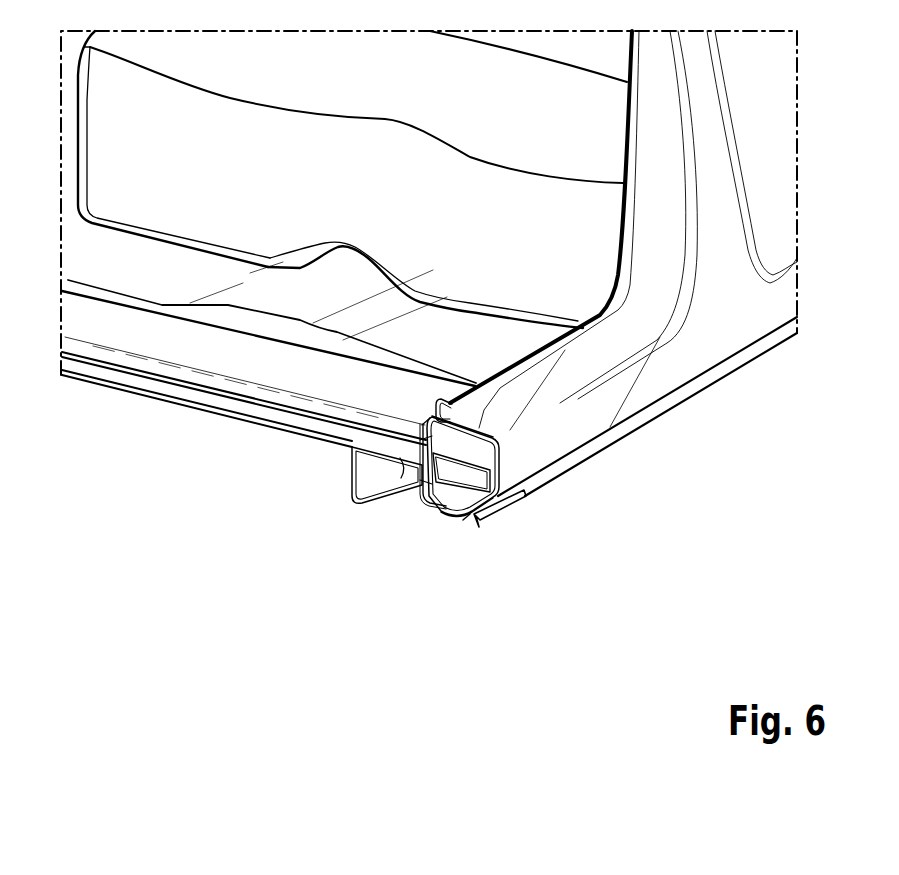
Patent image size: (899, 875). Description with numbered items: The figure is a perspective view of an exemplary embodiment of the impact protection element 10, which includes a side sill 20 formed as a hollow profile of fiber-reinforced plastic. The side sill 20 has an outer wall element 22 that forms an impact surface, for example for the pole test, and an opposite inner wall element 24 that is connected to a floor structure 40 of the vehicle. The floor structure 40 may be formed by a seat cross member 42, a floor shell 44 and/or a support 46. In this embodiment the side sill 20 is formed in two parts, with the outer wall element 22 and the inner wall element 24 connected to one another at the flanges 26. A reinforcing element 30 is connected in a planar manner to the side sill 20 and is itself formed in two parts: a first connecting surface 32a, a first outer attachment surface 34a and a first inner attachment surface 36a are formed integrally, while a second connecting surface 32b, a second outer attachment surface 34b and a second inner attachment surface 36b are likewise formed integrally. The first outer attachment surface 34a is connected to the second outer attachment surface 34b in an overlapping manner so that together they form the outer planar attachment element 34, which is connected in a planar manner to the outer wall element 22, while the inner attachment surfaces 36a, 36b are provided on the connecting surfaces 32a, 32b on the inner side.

The impact protection element 10 is at (550, 610).
The side sill 20 is at (530, 397).
The outer wall element 22 is at (574, 435).
The inner wall element 24 is at (442, 500).
The flanges 26 is at (443, 407).
The reinforcing element 30 is at (473, 436).
The first connecting surface 32a is at (460, 412).
The second connecting surface 32b is at (457, 517).
The outer planar attachment element 34 is at (649, 384).
The first outer attachment surface 34a is at (502, 486).
The second outer attachment surface 34b is at (506, 494).
The first inner attachment surface 36a is at (398, 491).
The second inner attachment surface 36b is at (443, 498).
The floor structure 40 is at (85, 439).
The seat cross member 42 is at (203, 388).
The floor shell 44 is at (137, 398).
The support 46 is at (365, 468).